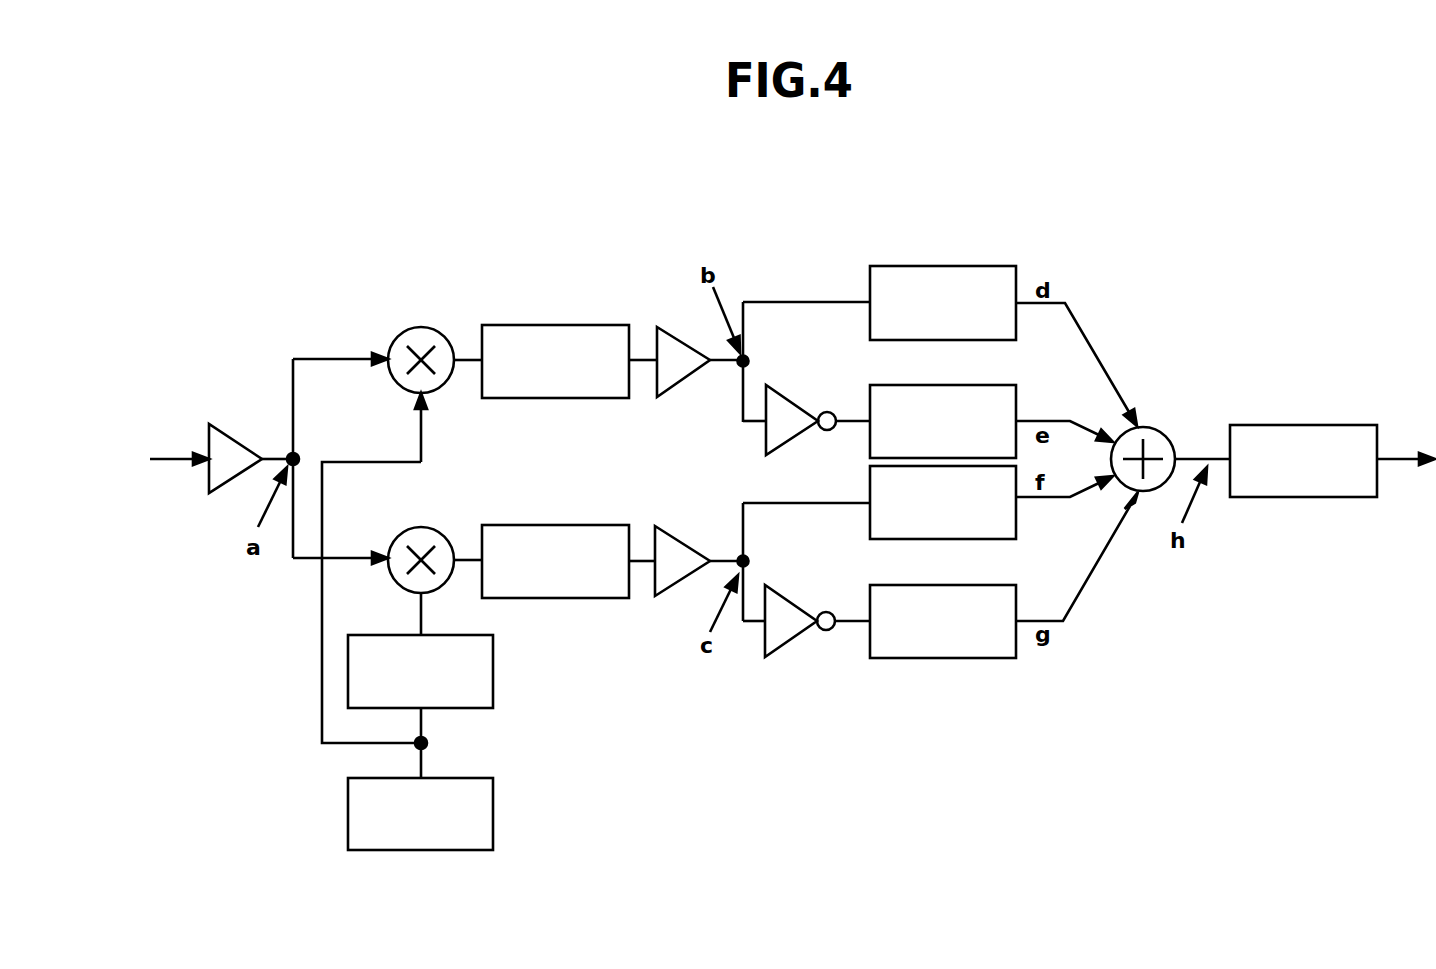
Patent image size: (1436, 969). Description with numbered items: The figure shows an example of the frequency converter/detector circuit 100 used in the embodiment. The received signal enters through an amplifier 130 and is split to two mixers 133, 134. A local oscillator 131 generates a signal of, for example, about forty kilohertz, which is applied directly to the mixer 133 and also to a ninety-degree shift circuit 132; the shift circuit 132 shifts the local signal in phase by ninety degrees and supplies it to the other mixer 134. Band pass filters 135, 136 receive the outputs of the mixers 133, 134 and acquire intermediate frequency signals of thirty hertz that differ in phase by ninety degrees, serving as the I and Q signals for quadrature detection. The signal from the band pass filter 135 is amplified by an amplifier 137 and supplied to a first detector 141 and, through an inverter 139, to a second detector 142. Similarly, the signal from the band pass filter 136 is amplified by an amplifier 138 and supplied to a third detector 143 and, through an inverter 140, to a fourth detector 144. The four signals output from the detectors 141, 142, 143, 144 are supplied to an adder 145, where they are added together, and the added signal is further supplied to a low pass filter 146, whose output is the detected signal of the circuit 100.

The frequency converter/detector circuit 100 is at (1163, 270).
The amplifier 130 is at (222, 430).
The local oscillator 131 is at (447, 778).
The 90-deg shift circuit 132 is at (447, 635).
The mixer 133 is at (421, 327).
The mixer 134 is at (433, 529).
The band pass filter 135 is at (555, 325).
The band pass filter 136 is at (555, 525).
The amplifier 137 is at (677, 327).
The amplifier 138 is at (690, 512).
The inverter 139 is at (795, 402).
The inverter 140 is at (808, 577).
The first detector 141 is at (943, 266).
The second detector 142 is at (943, 385).
The third detector 143 is at (933, 539).
The fourth detector 144 is at (942, 585).
The adder 145 is at (1162, 427).
The low pass filter 146 is at (1303, 425).